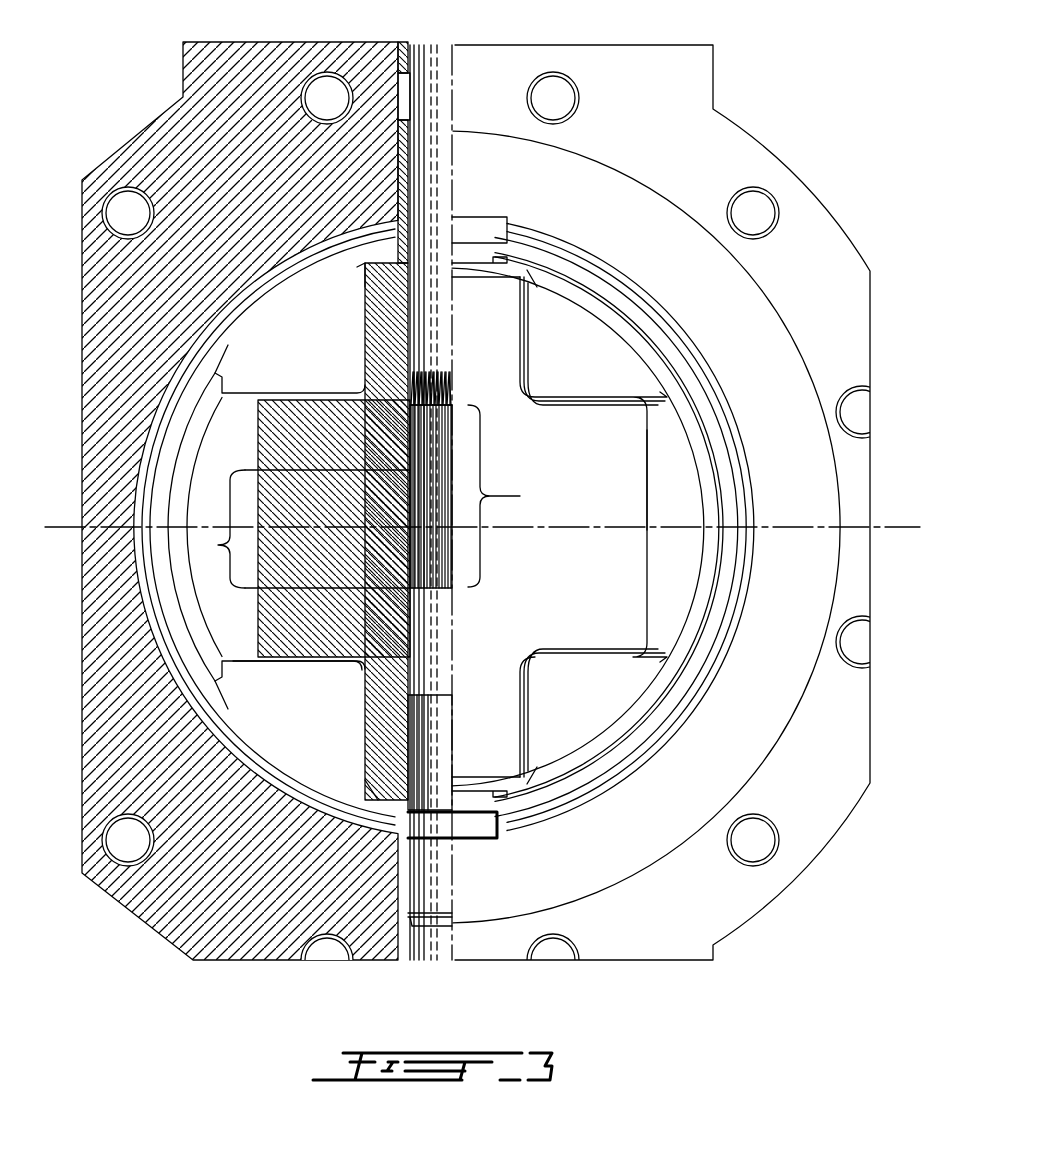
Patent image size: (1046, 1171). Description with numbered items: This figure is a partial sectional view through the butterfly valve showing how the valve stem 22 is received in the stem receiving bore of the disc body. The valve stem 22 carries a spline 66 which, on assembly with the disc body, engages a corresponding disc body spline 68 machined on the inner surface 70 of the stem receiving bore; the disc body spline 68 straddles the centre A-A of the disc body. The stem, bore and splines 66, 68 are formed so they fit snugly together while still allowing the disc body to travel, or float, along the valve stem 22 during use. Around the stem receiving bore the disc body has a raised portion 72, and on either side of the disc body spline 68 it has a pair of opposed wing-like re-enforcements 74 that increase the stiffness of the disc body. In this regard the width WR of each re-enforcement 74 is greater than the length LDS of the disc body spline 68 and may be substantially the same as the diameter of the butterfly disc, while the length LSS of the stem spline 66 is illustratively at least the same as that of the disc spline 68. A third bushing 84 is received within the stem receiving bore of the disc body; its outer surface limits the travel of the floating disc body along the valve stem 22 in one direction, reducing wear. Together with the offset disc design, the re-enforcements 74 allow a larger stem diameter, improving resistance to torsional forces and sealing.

The valve stem 22 is at (427, 222).
The spline 66 is at (407, 430).
The wing-like re-enforcements 74 is at (287, 430).
The inner surface 70 is at (427, 560).
The disc body spline 68 is at (440, 545).
The third bushing 84 is at (430, 737).
The raised portion 72 is at (495, 315).
The length of the stem spline LSS is at (522, 495).
The width of each re-enforcement WR is at (650, 480).
The length of the disc body spline LDS is at (218, 546).
The centre of the disc body A is at (482, 529).